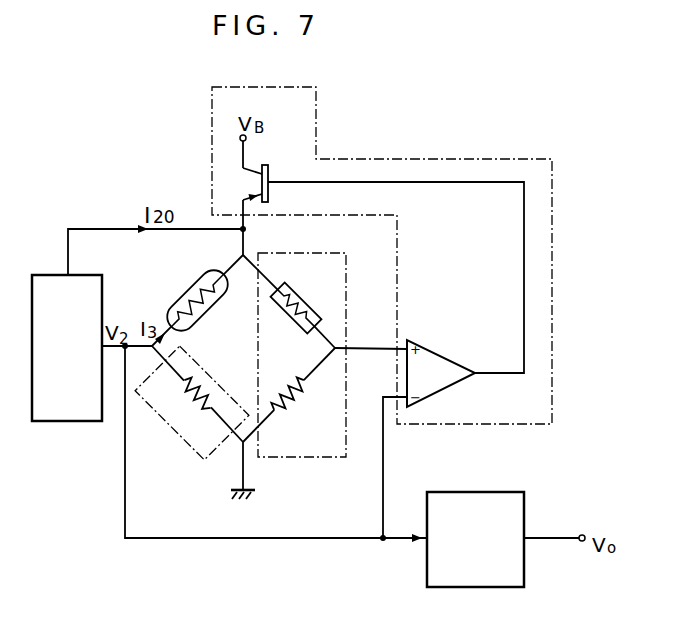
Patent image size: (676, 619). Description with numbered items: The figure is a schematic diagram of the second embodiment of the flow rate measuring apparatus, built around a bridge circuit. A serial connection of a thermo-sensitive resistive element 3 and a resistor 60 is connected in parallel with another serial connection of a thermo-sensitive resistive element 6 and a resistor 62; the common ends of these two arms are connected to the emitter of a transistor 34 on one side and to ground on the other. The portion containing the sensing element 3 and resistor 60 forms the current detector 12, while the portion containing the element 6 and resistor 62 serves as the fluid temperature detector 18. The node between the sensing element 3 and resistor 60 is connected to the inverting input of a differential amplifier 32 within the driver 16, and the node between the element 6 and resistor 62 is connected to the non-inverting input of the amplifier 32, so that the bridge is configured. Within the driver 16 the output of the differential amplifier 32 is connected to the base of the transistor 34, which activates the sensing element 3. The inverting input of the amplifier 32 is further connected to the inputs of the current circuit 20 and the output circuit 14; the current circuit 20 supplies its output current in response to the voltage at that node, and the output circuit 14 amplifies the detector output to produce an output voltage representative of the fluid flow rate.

The thermo-sensitive resistive element 3 is at (200, 277).
The thermo-sensitive resistive element 6 is at (300, 290).
The current detector 12 is at (177, 437).
The output circuit 14 is at (525, 562).
The driver 16 is at (500, 425).
The fluid temperature detector 18 is at (305, 457).
The current circuit 20 is at (75, 421).
The differential amplifier 32 is at (452, 362).
The transistor 34 is at (268, 170).
The resistor 60 is at (194, 401).
The resistor 62 is at (295, 408).